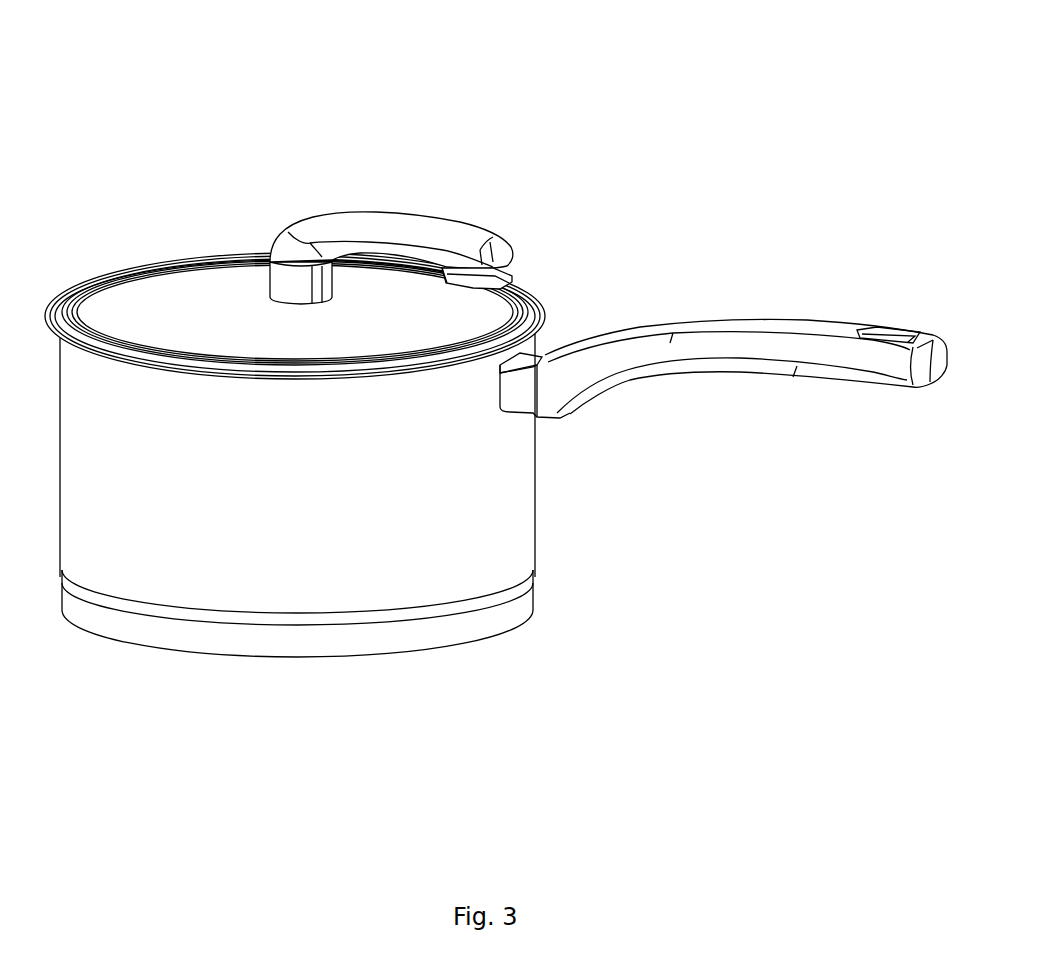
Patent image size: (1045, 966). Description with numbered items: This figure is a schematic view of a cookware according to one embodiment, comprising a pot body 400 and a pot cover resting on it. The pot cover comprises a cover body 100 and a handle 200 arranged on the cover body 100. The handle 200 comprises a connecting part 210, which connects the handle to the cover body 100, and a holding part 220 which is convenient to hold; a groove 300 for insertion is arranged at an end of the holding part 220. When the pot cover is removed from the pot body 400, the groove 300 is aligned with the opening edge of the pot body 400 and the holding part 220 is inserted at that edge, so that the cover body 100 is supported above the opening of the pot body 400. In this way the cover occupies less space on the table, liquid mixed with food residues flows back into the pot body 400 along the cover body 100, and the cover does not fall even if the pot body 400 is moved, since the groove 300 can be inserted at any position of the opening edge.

The cover body 100 is at (200, 312).
The handle 200 is at (313, 217).
The connecting part 210 is at (290, 282).
The holding part 220 is at (408, 232).
The groove 300 is at (508, 270).
The pot body 400 is at (213, 560).